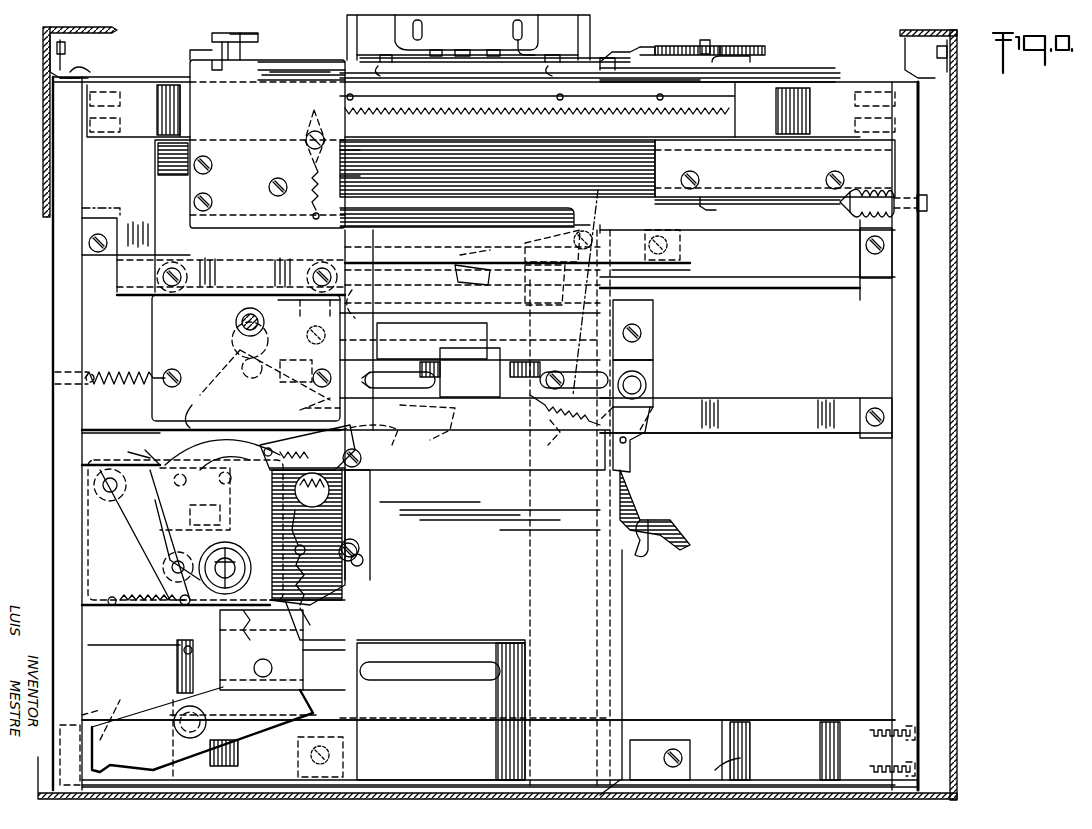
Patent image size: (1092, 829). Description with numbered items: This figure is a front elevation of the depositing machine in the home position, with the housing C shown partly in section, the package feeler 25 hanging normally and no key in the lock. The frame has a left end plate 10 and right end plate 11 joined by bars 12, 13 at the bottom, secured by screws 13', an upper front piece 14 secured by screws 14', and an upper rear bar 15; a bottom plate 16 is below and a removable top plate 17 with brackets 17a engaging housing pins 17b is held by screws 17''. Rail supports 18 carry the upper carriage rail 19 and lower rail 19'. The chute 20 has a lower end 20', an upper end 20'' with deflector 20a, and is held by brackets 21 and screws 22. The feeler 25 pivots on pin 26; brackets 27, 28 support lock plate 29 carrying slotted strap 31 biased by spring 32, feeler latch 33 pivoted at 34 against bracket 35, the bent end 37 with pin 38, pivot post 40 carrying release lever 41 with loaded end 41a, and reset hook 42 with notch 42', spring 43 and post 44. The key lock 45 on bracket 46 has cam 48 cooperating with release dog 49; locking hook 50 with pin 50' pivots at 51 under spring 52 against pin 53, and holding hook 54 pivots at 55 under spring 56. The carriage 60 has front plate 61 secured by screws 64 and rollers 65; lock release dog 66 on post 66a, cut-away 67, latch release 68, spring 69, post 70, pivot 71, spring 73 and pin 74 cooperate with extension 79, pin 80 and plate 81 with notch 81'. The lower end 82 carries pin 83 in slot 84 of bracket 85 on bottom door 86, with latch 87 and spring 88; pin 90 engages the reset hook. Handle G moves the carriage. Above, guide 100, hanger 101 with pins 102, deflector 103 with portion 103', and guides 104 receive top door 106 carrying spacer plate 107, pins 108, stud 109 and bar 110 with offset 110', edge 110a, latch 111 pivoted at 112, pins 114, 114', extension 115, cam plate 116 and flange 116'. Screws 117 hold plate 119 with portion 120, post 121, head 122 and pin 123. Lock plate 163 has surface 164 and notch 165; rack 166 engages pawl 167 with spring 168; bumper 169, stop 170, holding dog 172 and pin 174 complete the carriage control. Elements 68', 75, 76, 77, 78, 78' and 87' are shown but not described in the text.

The housing C is at (38, 125).
The left end plate 10 is at (60, 398).
The right end plate 11 is at (918, 458).
The lower rear distance bar 12 is at (680, 738).
The bottom distance bar 13 is at (488, 738).
The screws 13' is at (487, 738).
The upper front distance piece 14 is at (483, 110).
The screws 14' is at (492, 111).
The upper rear bar 15 is at (826, 283).
The bottom plate 16 is at (736, 750).
The top plate 17 is at (717, 66).
The brackets 17a is at (48, 66).
The pins 17b is at (78, 36).
The screws 17'' is at (93, 64).
The carriage rail supports 18 is at (90, 312).
The upper carriage rail 19 is at (747, 260).
The lower carriage rail 19' is at (746, 401).
The chute 20 is at (509, 507).
The lower chute end 20' is at (581, 797).
The upper chute end 20'' is at (612, 220).
The package deflector 20a is at (440, 210).
The brackets 21 is at (680, 268).
The screws 22 is at (668, 246).
The package feeler 25 is at (530, 575).
The pin 26 is at (140, 626).
The bracket 27 is at (224, 674).
The bracket 28 is at (632, 312).
The package feeler lock plate 29 is at (475, 361).
The slotted strap 31 is at (485, 374).
The spring 32 is at (146, 372).
The feeler latch 33 is at (405, 332).
The pivot 34 is at (230, 334).
The bracket 35 is at (470, 372).
The bent end of strap 37 is at (648, 386).
The pin 38 is at (650, 362).
The pivot post 40 is at (380, 450).
The carriage release lever 41 is at (436, 438).
The loaded end 41a is at (307, 447).
The feeler reset hook 42 is at (659, 510).
The notch 42' is at (647, 543).
The spring 43 is at (565, 426).
The post 44 is at (640, 440).
The key operated lock 45 is at (215, 550).
The bracket 46 is at (140, 545).
The cam 48 is at (307, 534).
The release dog 49 is at (291, 524).
The carriage locking hook 50 is at (182, 532).
The pin 50' is at (190, 512).
The pivot 51 is at (102, 488).
The spring 52 is at (150, 448).
The pin 53 is at (187, 413).
The carriage lock holding hook 54 is at (150, 520).
The pivot 55 is at (165, 598).
The spring 56 is at (118, 588).
The carriage 60 is at (146, 174).
The front plate 61 is at (165, 182).
The screws 64 is at (172, 262).
The rollers 65 is at (180, 264).
The carriage lock release dog 66 is at (366, 535).
The pivot post 66a is at (368, 466).
The cut-away 67 is at (335, 548).
The feeler latch release 68 is at (376, 442).
The arm 68' is at (470, 350).
The spring 69 is at (300, 457).
The post 70 is at (320, 518).
The pivot 71 is at (362, 568).
The spring 73 is at (307, 555).
The pin 74 is at (290, 575).
The screw 75 is at (318, 325).
The arm 76 is at (290, 404).
The pinion 77 is at (244, 362).
The arm 78 is at (265, 382).
The arm 78' is at (296, 379).
The hook-like extension 79 is at (202, 477).
The pin 80 is at (203, 499).
The plate 81 is at (197, 603).
The notch 81' is at (148, 567).
The lower end of rear carriage plate 82 is at (300, 690).
The pin 83 is at (275, 668).
The slot 84 is at (420, 662).
The bracket 85 is at (478, 640).
The bottom door 86 is at (440, 780).
The latch 87 is at (206, 733).
The pivot 87' is at (237, 717).
The spring 88 is at (215, 672).
The pin 90 is at (222, 450).
The carriage operating handle G is at (234, 318).
The top package guide 100 is at (348, 22).
The package hanger 101 is at (458, 55).
The pins 102 is at (412, 32).
The package deflector 103 is at (497, 168).
The right portion of deflector 103' is at (537, 116).
The top door guides 104 is at (275, 78).
The top door 106 is at (612, 70).
The spacer plate 107 is at (490, 72).
The pins 108 is at (388, 60).
The headed stud 109 is at (436, 48).
The bar 110 is at (301, 45).
The offset 110' is at (620, 39).
The front edge of bar 110a is at (305, 68).
The latch 111 is at (522, 52).
The pivot 112 is at (494, 48).
The pin 114 is at (187, 42).
The pin 114' is at (688, 35).
The oblique extension 115 is at (648, 45).
The door opening cam plate 116 is at (767, 38).
The flange 116' is at (744, 59).
The screws 117 is at (272, 184).
The plate 119 is at (267, 144).
The rearward portion 120 is at (200, 48).
The post 121 is at (232, 30).
The head 122 is at (244, 32).
The pin 123 is at (220, 70).
The cutting carriage lock plate 163 is at (775, 168).
The sloping surface 164 is at (723, 211).
The notch 165 is at (790, 200).
The rack 166 is at (442, 116).
The pawl 167 is at (350, 157).
The spring 168 is at (345, 174).
The bumper 169 is at (868, 190).
The stop 170 is at (240, 252).
The holding dog 172 is at (294, 619).
The pin 174 is at (261, 625).